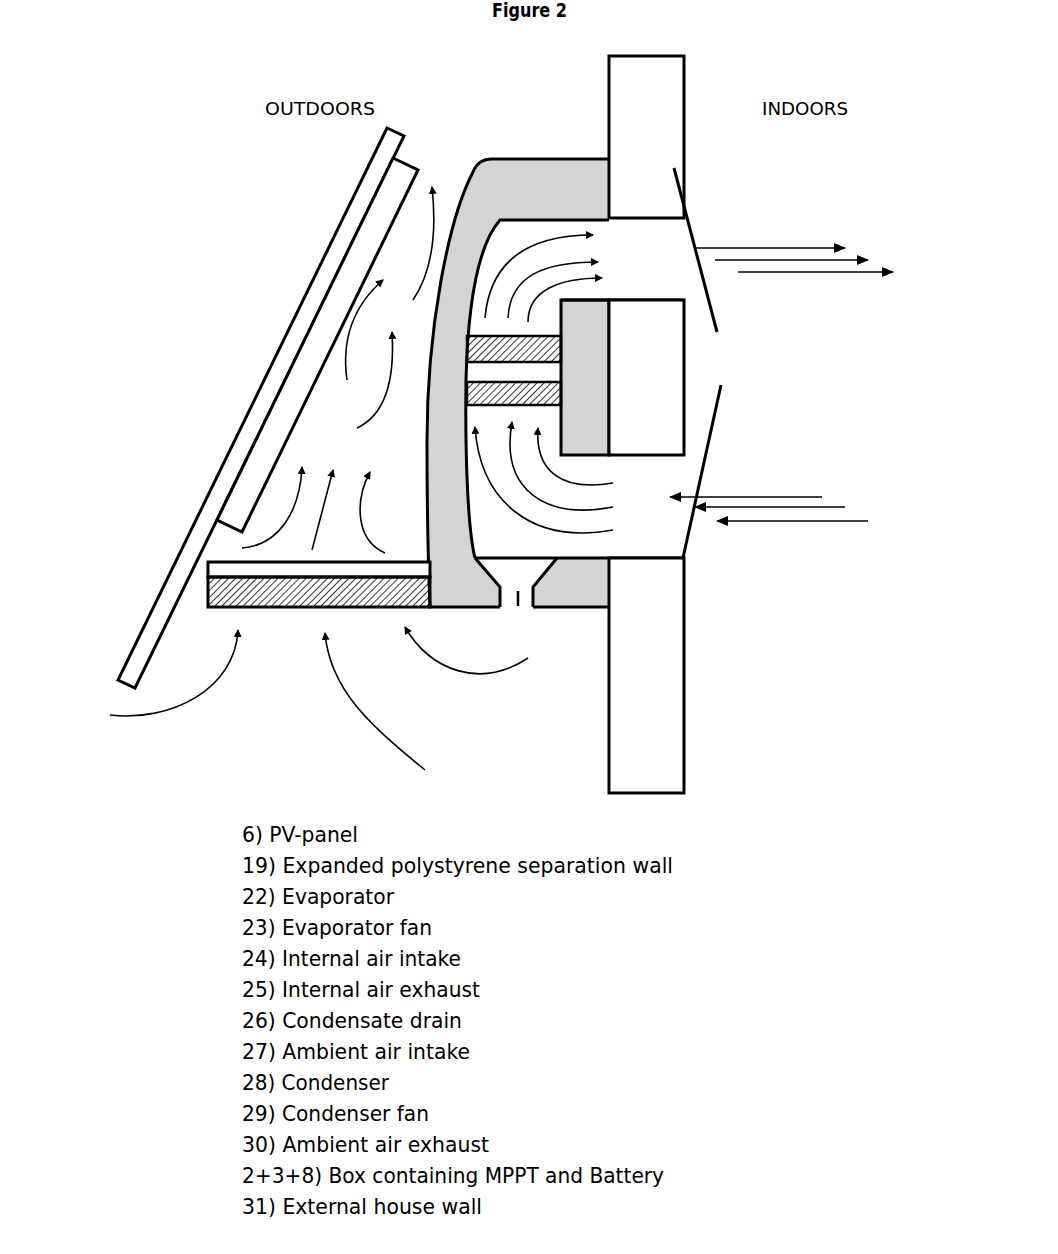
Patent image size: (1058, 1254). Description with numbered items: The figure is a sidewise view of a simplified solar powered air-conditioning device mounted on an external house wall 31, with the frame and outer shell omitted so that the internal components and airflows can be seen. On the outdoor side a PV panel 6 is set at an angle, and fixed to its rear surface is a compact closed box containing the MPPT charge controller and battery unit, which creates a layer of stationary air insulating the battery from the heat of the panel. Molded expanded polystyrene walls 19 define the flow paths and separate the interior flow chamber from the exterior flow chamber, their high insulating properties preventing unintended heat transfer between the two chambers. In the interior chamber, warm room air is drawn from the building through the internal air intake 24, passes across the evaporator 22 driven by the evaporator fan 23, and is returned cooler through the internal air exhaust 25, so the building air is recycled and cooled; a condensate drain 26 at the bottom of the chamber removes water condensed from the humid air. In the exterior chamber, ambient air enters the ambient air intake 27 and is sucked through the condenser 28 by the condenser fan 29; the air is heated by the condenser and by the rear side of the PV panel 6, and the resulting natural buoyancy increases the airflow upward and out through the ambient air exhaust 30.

The PV solar panel 6 is at (327, 272).
The expanded polystyrene separation wall 19 is at (552, 168).
The evaporator 22 is at (552, 343).
The evaporator fan 23 is at (548, 372).
The internal air intake 24 is at (617, 480).
The internal air exhaust 25 is at (602, 267).
The condensate drain 26 is at (520, 606).
The ambient air intake 27 is at (418, 703).
The condenser 28 is at (292, 593).
The condenser fan 29 is at (257, 570).
The ambient air exhaust 30 is at (462, 167).
The external house wall 31 is at (665, 361).